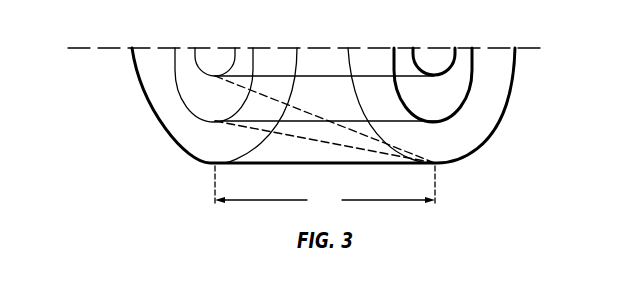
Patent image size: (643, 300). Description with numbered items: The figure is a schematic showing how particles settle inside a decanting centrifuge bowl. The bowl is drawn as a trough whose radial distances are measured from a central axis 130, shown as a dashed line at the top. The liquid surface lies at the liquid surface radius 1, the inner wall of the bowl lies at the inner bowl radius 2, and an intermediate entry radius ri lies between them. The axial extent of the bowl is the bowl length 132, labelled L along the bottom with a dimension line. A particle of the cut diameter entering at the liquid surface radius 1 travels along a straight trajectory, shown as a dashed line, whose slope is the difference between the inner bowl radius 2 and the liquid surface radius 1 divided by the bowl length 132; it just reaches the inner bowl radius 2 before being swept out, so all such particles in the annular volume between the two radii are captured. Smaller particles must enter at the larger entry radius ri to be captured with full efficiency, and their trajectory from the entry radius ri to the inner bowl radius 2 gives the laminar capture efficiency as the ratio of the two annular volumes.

The central axis 130 is at (560, 47).
The bowl length 132 is at (370, 200).
The liquid surface level r1 1 is at (192, 107).
The entry radius ri is at (216, 124).
The inner radius of the bowl r2 2 is at (213, 165).